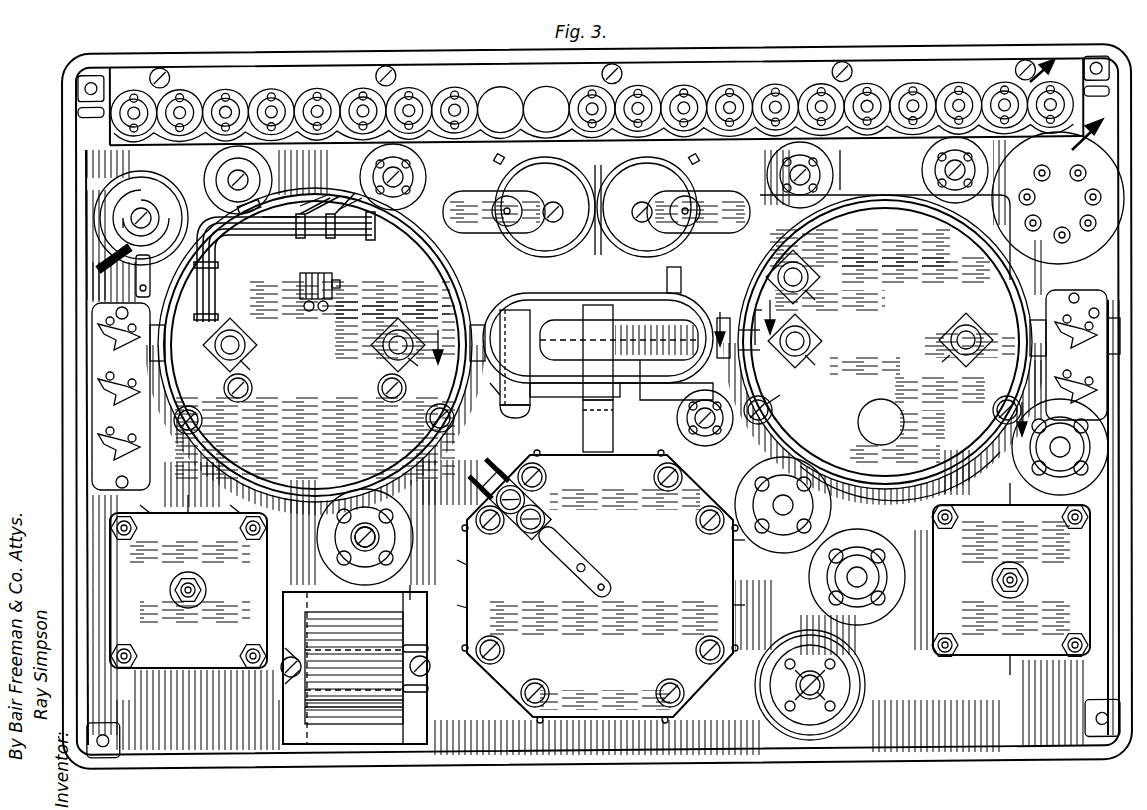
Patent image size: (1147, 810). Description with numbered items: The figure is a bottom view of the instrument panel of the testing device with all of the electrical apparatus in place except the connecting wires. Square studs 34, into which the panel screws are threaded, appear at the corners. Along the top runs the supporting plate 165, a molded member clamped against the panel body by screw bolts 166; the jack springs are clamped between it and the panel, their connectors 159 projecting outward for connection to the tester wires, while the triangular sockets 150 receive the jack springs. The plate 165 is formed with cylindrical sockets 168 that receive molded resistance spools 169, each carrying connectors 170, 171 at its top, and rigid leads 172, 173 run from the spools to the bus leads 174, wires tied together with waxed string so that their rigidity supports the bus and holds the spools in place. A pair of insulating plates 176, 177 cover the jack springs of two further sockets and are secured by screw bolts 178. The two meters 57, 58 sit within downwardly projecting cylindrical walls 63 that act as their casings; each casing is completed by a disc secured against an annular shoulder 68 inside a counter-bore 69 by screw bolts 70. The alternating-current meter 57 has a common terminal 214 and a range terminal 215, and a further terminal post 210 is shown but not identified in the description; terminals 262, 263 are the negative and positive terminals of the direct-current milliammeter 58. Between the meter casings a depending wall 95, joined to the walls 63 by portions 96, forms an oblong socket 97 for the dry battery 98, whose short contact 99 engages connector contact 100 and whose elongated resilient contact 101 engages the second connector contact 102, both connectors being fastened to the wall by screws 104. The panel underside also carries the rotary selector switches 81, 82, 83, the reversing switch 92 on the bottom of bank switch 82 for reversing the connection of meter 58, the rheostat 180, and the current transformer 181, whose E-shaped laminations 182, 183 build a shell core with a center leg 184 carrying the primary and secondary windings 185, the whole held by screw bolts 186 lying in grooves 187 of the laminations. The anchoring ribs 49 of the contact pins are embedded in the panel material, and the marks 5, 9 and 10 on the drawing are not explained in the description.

The square studs 34 is at (76, 86).
The screw bolts 166 is at (152, 70).
The connector 171 is at (175, 88).
The cylindrical sockets 168 is at (220, 88).
The connector 170 is at (196, 98).
The resistance spools 169 is at (245, 98).
The supporting plate 165 is at (295, 72).
The lead 172 is at (368, 212).
The lead 173 is at (345, 235).
The bus leads 174 is at (282, 240).
The rheostat 180 is at (98, 195).
The insulating plate 176 is at (520, 185).
The insulating plate 177 is at (668, 182).
The screw bolts 178 is at (545, 222).
The cylindrical wall 63 is at (851, 170).
The connectors 159 is at (882, 145).
The anchoring ribs 49 is at (1075, 168).
The section line 5 is at (1070, 102).
The sockets 150 is at (92, 340).
The direct current milliammeter 58 is at (330, 381).
The negative terminal 262 is at (262, 328).
The positive terminal 263 is at (380, 348).
The section line 9 is at (601, 324).
The section line 10 is at (873, 382).
The portion 96 is at (722, 316).
The depending wall 95 is at (675, 282).
The elongated resilient contact 101 is at (630, 320).
The connector contact 100 is at (552, 385).
The short contact 99 is at (500, 385).
The second connector contact 102 is at (596, 314).
The screws 104 is at (583, 425).
The dry battery 98 is at (642, 382).
The oblong socket 97 is at (663, 392).
The meter 57 is at (925, 300).
The terminal 215 is at (810, 268).
The common terminal 214 is at (818, 350).
The terminal post 210 is at (1000, 390).
The screw bolts 70 is at (765, 408).
The counter-bore 69 is at (798, 440).
The annular shoulder 68 is at (822, 470).
The reversing switch 92 is at (535, 492).
The selector switch 82 is at (740, 548).
The selector switch 83 is at (188, 668).
The selector switch 81 is at (1000, 658).
The current transformer 181 is at (318, 592).
The laminations 182 is at (283, 592).
The laminations 183 is at (420, 651).
The center leg 184 is at (370, 648).
The primary and secondary windings 185 is at (395, 702).
The screw bolts 186 is at (285, 672).
The grooves 187 is at (283, 636).